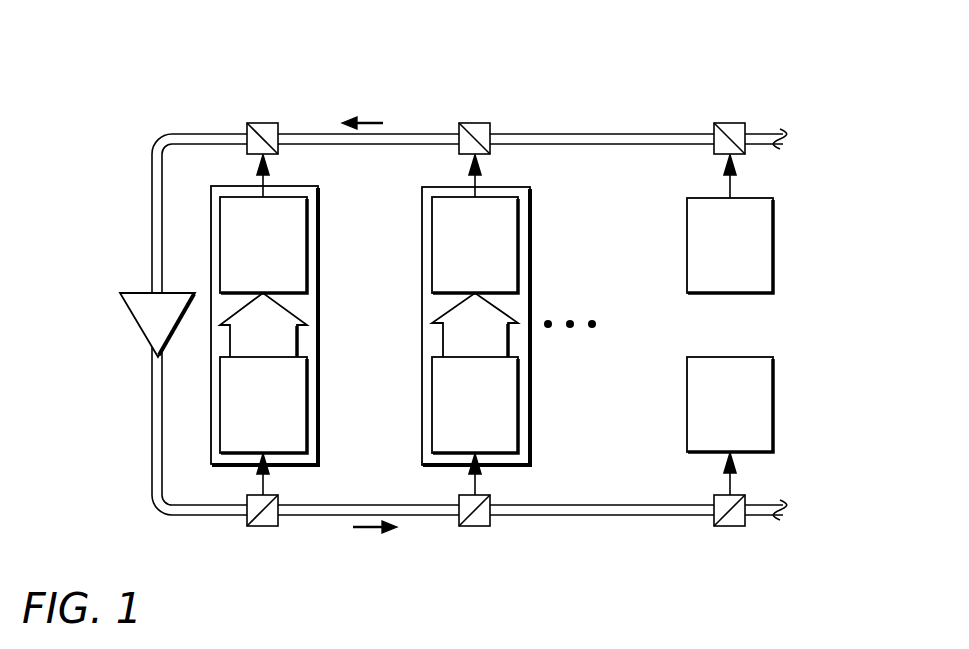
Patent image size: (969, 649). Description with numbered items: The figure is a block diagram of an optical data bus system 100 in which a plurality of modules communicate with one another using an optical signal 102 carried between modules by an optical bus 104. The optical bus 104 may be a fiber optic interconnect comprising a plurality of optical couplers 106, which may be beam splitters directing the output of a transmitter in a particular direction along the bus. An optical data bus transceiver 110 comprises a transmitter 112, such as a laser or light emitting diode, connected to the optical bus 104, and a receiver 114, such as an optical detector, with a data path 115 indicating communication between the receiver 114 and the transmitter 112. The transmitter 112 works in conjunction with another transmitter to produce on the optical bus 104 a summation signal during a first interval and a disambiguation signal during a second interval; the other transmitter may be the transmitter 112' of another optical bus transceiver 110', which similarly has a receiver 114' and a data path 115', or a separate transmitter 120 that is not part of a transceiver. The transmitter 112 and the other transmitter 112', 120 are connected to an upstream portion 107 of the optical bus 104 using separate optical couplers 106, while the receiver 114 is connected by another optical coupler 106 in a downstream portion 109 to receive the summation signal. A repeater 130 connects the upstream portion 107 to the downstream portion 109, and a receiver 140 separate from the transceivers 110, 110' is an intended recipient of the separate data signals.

The optical data bus system 100 is at (178, 71).
The optical signal 102 is at (370, 120).
The optical bus 104 is at (155, 208).
The optical coupler 106 is at (263, 122).
The upstream portion 107 is at (147, 133).
The downstream portion 109 is at (147, 516).
The optical data bus transceiver 110 is at (307, 308).
The other optical bus transceiver 110' is at (523, 308).
The transmitter 112 is at (312, 245).
The other transmitter 112' is at (528, 245).
The receiver 114 is at (310, 405).
The receiver of other transceiver 114' is at (528, 405).
The data path 115 is at (263, 325).
The data path of other transceiver 115' is at (475, 325).
The separate transmitter 120 is at (761, 198).
The repeater 130 is at (135, 293).
The receiver 140 is at (761, 357).